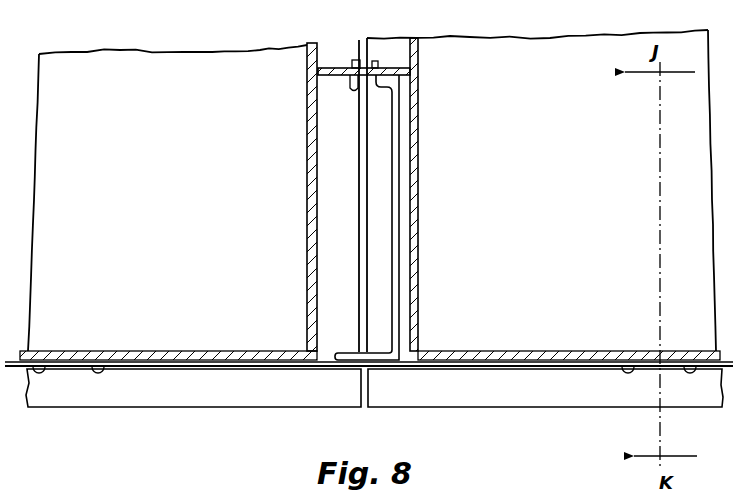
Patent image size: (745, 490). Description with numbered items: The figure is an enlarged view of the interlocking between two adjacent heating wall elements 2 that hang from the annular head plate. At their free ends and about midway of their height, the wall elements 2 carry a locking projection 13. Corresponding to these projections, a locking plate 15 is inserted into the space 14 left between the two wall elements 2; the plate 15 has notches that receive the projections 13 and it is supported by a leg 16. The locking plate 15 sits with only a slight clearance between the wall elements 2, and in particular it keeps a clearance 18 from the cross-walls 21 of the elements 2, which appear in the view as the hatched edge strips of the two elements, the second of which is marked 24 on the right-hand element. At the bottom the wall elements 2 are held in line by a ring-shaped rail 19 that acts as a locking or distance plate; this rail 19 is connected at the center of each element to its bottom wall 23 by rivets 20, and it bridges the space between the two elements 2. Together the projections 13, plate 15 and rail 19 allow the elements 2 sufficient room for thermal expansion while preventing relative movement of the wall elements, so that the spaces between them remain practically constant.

The wall element 2 is at (173, 66).
The locking projection 13 is at (373, 59).
The space 14 is at (298, 197).
The locking plate 15 is at (320, 66).
The leg 16 is at (400, 263).
The clearance 18 is at (434, 194).
The ring-shaped rail 19 is at (437, 367).
The rivets 20 is at (98, 373).
The cross-wall 21 is at (297, 290).
The bottom wall 23 is at (494, 370).
The panel edge 24 is at (417, 316).